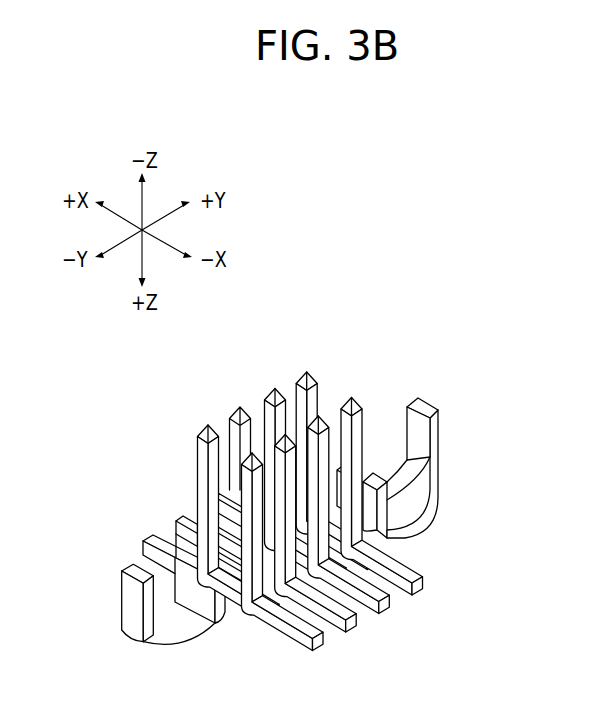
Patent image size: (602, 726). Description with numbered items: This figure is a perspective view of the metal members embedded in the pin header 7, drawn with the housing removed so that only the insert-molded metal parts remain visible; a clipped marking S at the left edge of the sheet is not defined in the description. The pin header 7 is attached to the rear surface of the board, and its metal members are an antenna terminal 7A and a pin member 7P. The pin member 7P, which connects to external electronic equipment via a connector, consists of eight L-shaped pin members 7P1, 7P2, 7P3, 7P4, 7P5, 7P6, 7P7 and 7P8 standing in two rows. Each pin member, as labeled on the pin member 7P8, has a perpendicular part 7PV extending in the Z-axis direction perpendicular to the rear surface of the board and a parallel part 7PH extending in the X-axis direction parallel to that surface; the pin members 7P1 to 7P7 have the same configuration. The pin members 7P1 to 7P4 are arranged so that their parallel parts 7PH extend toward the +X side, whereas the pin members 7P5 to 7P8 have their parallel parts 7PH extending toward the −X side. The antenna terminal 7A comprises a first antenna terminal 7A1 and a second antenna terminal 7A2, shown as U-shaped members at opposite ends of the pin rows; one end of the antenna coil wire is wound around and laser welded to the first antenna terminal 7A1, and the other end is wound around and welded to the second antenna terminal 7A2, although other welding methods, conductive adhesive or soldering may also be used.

The pin header 7 is at (375, 375).
The pin member 7P is at (322, 516).
The pin member 7P1 is at (313, 389).
The pin member 7P2 is at (270, 408).
The pin member 7P3 is at (227, 428).
The pin member 7P4 is at (197, 446).
The pin member 7P5 is at (417, 582).
The pin member 7P6 is at (380, 606).
The pin member 7P7 is at (347, 620).
The pin member 7P8 is at (265, 585).
The perpendicular part 7PV is at (247, 527).
The parallel part 7PH is at (323, 687).
The antenna terminal 7A is at (284, 529).
The first antenna terminal 7A1 is at (441, 440).
The second antenna terminal 7A2 is at (133, 607).
The substrate S is at (5, 552).